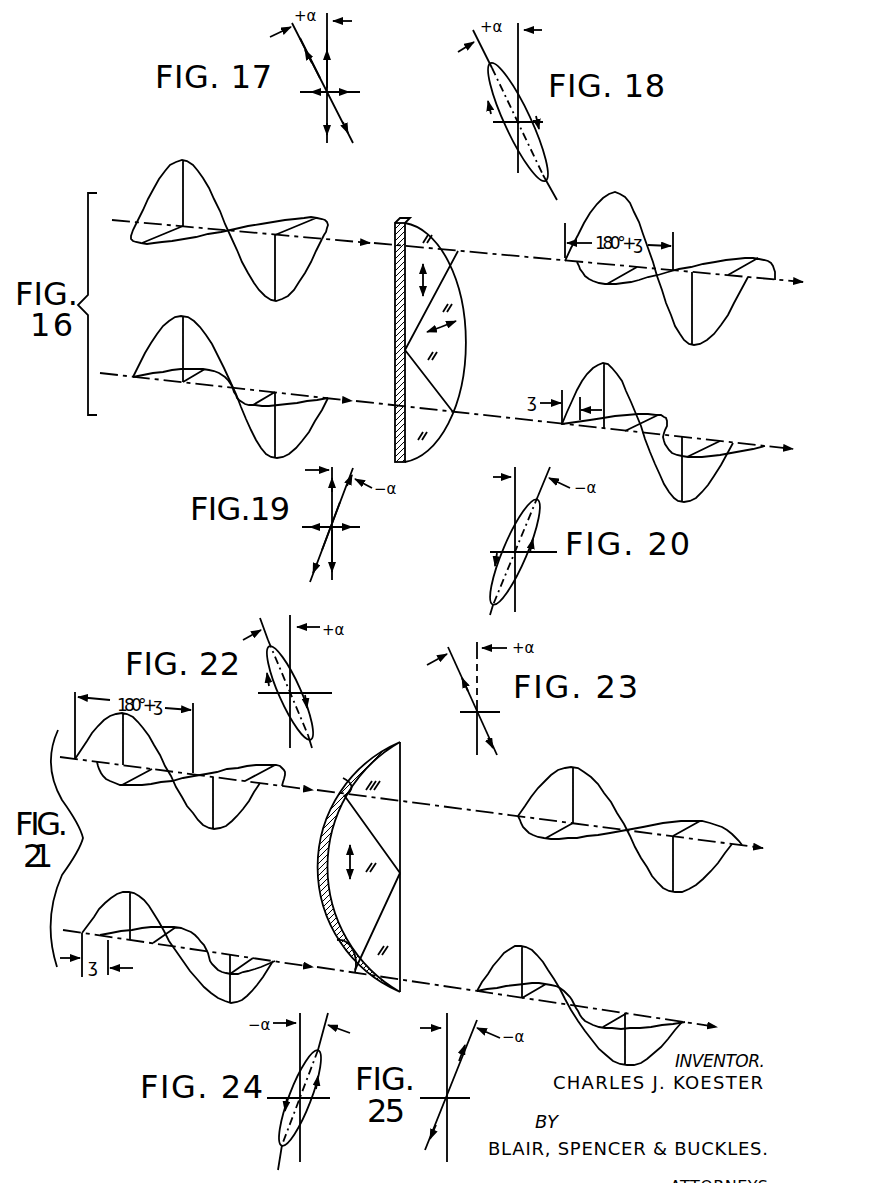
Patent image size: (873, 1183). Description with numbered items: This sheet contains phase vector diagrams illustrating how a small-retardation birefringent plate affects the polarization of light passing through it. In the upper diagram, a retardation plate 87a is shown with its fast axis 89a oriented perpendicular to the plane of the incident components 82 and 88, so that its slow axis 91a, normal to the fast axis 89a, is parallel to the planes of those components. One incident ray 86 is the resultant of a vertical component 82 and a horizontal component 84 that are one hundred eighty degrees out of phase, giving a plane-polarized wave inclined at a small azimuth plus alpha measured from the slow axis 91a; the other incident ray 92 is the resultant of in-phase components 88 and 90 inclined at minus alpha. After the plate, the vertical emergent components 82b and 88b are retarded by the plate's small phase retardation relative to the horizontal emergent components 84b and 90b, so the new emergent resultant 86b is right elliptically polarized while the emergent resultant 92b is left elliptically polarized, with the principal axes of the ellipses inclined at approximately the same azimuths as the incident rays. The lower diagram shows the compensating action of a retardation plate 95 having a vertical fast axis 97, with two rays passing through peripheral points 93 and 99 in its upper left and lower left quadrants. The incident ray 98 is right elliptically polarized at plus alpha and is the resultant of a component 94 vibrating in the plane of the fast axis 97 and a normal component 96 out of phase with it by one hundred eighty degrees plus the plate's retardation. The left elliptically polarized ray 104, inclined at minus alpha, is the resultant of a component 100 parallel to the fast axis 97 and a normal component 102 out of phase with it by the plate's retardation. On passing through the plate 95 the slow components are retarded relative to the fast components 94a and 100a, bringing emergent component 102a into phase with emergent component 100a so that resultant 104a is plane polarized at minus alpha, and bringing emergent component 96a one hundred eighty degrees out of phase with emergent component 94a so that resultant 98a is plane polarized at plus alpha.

In FIG. 16, the incident component 82 is at (218, 200).
In FIG. 17, the incident component 82 is at (328, 70).
In FIG. 16, the incident component 84 is at (279, 217).
In FIG. 17, the incident component 84 is at (336, 92).
In FIG. 17, the incident ray 86 is at (318, 72).
In FIG. 18, the emergent resultant 86b is at (487, 78).
In FIG. 16, the retardation plate 87a is at (400, 222).
In FIG. 16, the fast axis 89a is at (452, 333).
In FIG. 16, the slow axis 91a is at (423, 280).
In FIG. 16, the emergent component 82b is at (640, 210).
In FIG. 16, the emergent component 84b is at (750, 257).
In FIG. 16, the incident component 88 is at (211, 339).
In FIG. 19, the incident component 88 is at (336, 562).
In FIG. 16, the incident component 90 is at (158, 378).
In FIG. 19, the incident component 90 is at (338, 532).
In FIG. 16, the emergent component 88b is at (630, 384).
In FIG. 16, the emergent component 90b is at (657, 425).
In FIG. 19, the incident ray 92 is at (320, 556).
In FIG. 20, the emergent resultant 92b is at (505, 535).
In FIG. 21, the peripheral point 93 is at (346, 782).
In FIG. 21, the incident component 94 is at (183, 807).
In FIG. 21, the retardation plate 95 is at (390, 758).
In FIG. 21, the incident component 96 is at (100, 780).
In FIG. 21, the fast axis 97 is at (350, 862).
In FIG. 22, the incident ray 98 is at (283, 708).
In FIG. 23, the emergent ray 98a is at (490, 741).
In FIG. 21, the peripheral point 99 is at (331, 938).
In FIG. 21, the incident component 100 is at (147, 900).
In FIG. 21, the incident component 102 is at (187, 941).
In FIG. 21, the emergent component 94a is at (606, 797).
In FIG. 21, the emergent component 96a is at (523, 828).
In FIG. 21, the emergent component 100a is at (547, 970).
In FIG. 21, the emergent component 102a is at (587, 1022).
In FIG. 24, the incident ray 104 is at (282, 1124).
In FIG. 25, the emergent ray 104a is at (437, 1122).